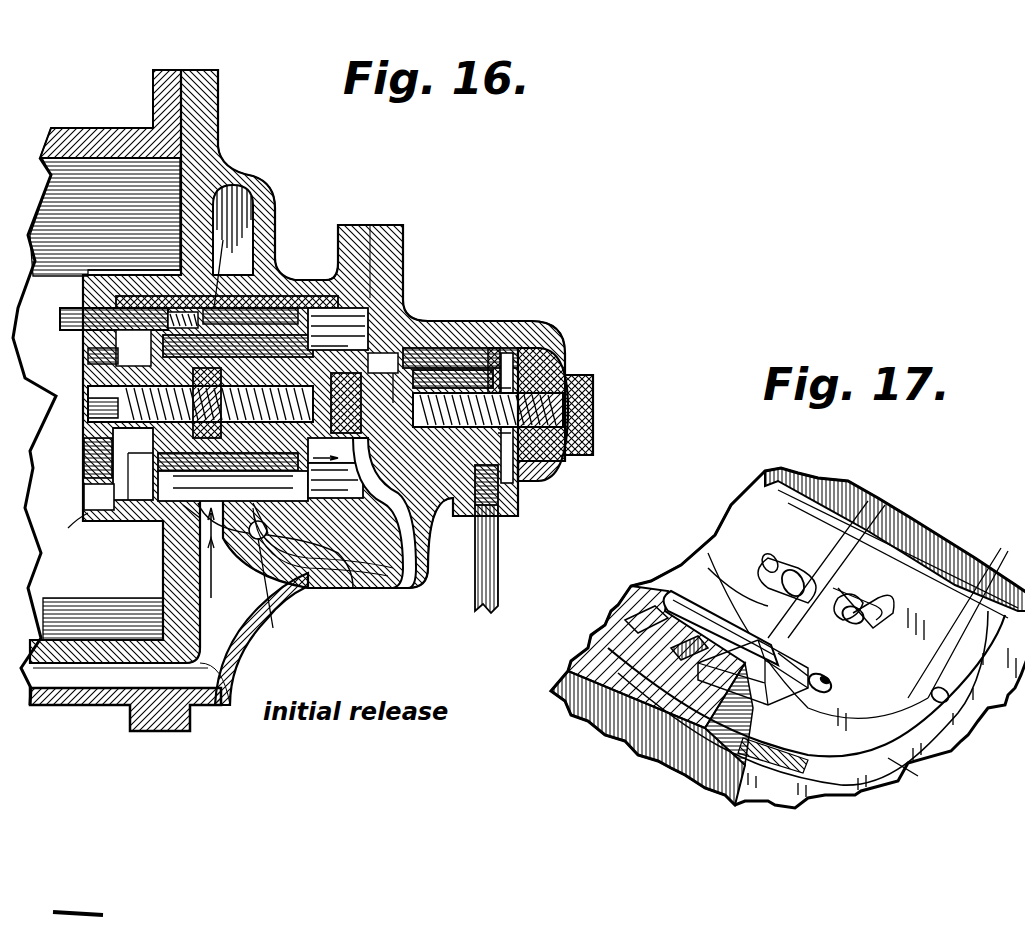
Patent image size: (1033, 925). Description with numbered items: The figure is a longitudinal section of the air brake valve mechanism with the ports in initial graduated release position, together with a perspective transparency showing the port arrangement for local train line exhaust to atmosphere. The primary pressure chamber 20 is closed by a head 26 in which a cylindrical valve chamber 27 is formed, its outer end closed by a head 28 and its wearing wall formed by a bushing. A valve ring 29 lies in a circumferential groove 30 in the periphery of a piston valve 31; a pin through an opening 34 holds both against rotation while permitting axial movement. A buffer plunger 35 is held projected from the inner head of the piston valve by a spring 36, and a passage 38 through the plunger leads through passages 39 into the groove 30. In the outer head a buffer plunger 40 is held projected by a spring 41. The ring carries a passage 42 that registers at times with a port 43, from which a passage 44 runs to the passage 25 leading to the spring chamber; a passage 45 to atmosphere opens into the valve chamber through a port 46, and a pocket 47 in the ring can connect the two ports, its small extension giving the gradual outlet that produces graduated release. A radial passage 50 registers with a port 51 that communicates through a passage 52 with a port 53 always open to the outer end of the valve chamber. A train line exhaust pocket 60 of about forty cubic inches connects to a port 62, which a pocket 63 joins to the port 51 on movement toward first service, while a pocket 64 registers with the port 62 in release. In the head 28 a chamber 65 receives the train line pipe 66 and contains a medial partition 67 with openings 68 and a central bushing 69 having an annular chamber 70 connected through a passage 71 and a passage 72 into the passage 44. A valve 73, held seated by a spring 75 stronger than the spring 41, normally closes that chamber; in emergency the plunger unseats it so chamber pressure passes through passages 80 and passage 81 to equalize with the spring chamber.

In FIG. 16, the chamber 20 is at (83, 150).
In FIG. 16, the passage 25 is at (82, 685).
In FIG. 16, the head 26 is at (210, 100).
In FIG. 17, the head 26 is at (915, 520).
In FIG. 16, the valve chamber 27 is at (115, 443).
In FIG. 17, the valve chamber 27 is at (963, 600).
In FIG. 16, the head 28 is at (380, 220).
In FIG. 16, the valve ring 29 is at (275, 287).
In FIG. 17, the valve ring 29 is at (735, 498).
In FIG. 16, the circumferential groove 30 is at (133, 464).
In FIG. 16, the piston valve 31 is at (142, 478).
In FIG. 16, the opening 34 is at (80, 320).
In FIG. 16, the buffer plunger 35 is at (108, 405).
In FIG. 16, the spring 36 is at (108, 335).
In FIG. 16, the passage 38 is at (80, 392).
In FIG. 16, the passages 39 is at (145, 535).
In FIG. 16, the buffer plunger 40 is at (393, 345).
In FIG. 16, the spring 41 is at (360, 375).
In FIG. 16, the passage 42 is at (185, 498).
In FIG. 17, the passage 42 is at (655, 580).
In FIG. 16, the port 43 is at (192, 549).
In FIG. 17, the port 43 is at (617, 617).
In FIG. 16, the passage 44 is at (215, 640).
In FIG. 16, the passage 45 is at (277, 592).
In FIG. 16, the port 46 is at (255, 640).
In FIG. 17, the port 46 is at (663, 644).
In FIG. 16, the pocket 47 is at (205, 520).
In FIG. 17, the pocket 47 is at (680, 720).
In FIG. 16, the passage 50 is at (335, 450).
In FIG. 17, the passage 50 is at (840, 590).
In FIG. 17, the port 51 is at (790, 565).
In FIG. 17, the passage 52 is at (870, 618).
In FIG. 16, the port 53 is at (340, 490).
In FIG. 17, the port 53 is at (935, 698).
In FIG. 16, the train line exhaust pocket 60 is at (232, 185).
In FIG. 17, the port 62 is at (830, 492).
In FIG. 17, the pocket 63 is at (860, 520).
In FIG. 17, the pocket 64 is at (893, 623).
In FIG. 16, the chamber 65 is at (512, 385).
In FIG. 16, the train line pipe 66 is at (490, 560).
In FIG. 16, the medial partition 67 is at (500, 345).
In FIG. 16, the openings 68 is at (478, 340).
In FIG. 16, the bushing 69 is at (445, 362).
In FIG. 16, the annular chamber 70 is at (430, 340).
In FIG. 16, the passage 71 is at (400, 568).
In FIG. 16, the passage 72 is at (315, 590).
In FIG. 16, the valve 73 is at (540, 340).
In FIG. 16, the spring 75 is at (585, 395).
In FIG. 16, the passages 80 is at (314, 270).
In FIG. 16, the passage 81 is at (395, 258).